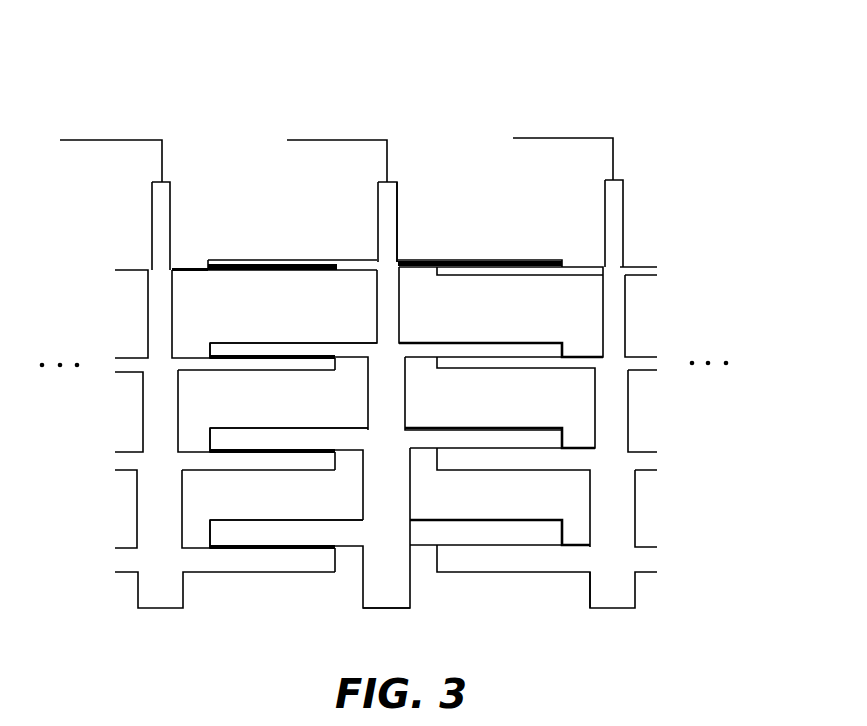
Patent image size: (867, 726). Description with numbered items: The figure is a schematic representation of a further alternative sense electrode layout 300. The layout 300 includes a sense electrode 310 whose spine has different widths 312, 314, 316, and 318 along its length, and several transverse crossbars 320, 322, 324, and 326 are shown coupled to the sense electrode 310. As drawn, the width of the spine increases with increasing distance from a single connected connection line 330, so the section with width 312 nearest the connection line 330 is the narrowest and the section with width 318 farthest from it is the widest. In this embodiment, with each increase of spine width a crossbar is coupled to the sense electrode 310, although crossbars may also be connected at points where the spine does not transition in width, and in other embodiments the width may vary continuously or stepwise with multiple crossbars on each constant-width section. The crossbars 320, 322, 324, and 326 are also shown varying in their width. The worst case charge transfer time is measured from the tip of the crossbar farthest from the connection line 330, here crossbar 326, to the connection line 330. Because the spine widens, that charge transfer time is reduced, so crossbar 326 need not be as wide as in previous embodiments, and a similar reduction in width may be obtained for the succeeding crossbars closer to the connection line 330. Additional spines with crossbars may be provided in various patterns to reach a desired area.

The sense electrode layout 300 is at (664, 63).
The sense electrode 310 is at (378, 204).
The first width 312 is at (397, 218).
The second width 314 is at (402, 303).
The third width 316 is at (405, 392).
The fourth width 318 is at (410, 493).
The transverse crossbar 320 is at (500, 260).
The transverse crossbar 322 is at (500, 343).
The transverse crossbar 324 is at (499, 428).
The transverse crossbar 326 is at (500, 520).
The connection line 330 is at (335, 140).